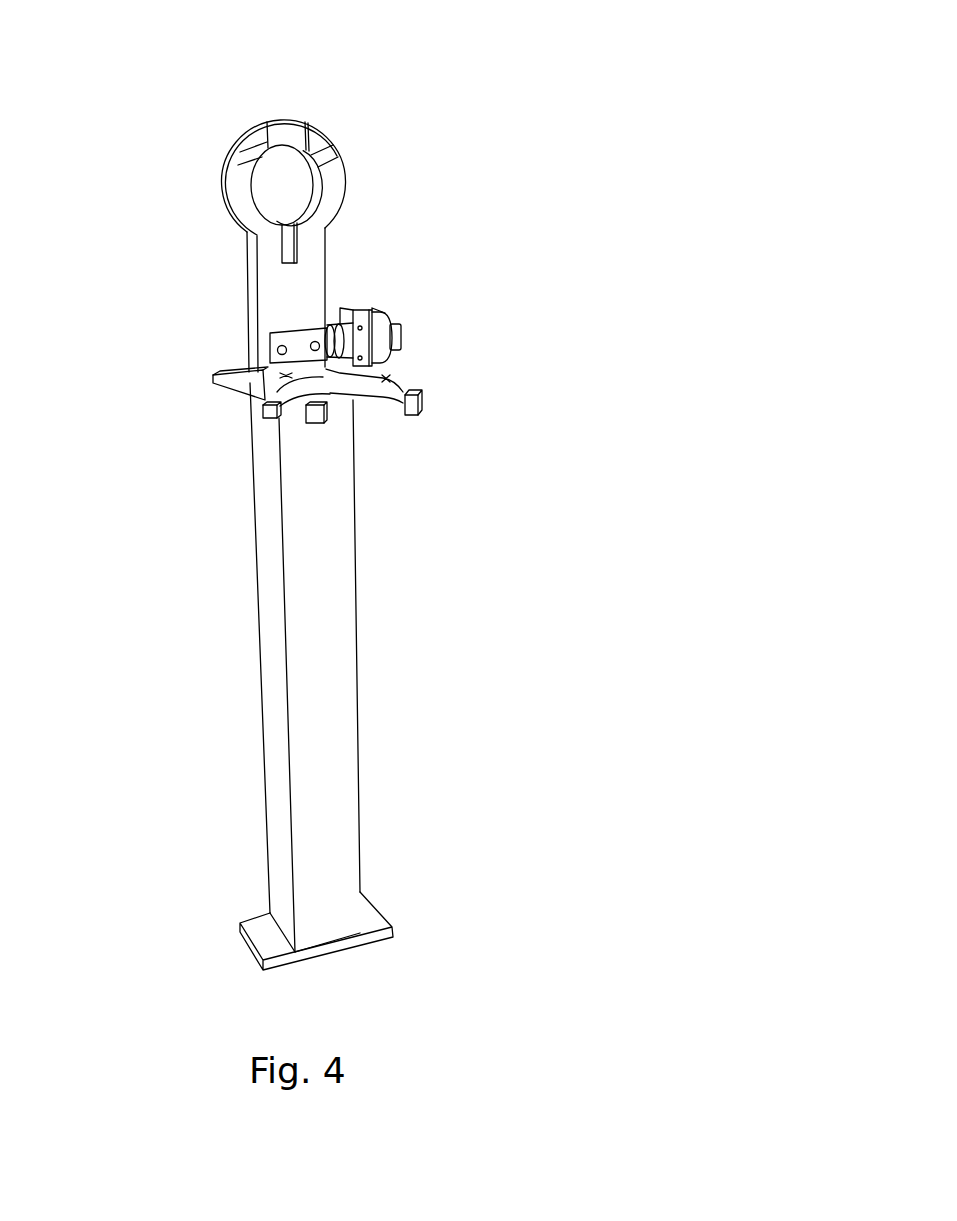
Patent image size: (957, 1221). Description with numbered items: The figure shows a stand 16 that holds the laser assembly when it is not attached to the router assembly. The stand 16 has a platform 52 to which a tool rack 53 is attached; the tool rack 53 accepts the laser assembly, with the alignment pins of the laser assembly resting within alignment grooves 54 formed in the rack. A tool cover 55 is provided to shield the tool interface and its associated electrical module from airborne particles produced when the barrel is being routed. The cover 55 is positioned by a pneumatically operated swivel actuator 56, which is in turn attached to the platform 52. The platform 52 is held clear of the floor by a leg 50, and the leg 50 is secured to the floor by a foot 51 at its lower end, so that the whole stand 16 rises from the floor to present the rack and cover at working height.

The stand 16 is at (566, 115).
The leg 50 is at (275, 660).
The foot 51 is at (265, 938).
The platform 52 is at (243, 372).
The tool rack 53 is at (280, 418).
The alignment grooves 54 is at (288, 418).
The tool cover 55 is at (237, 195).
The pneumatically operated swivel actuator 56 is at (372, 312).